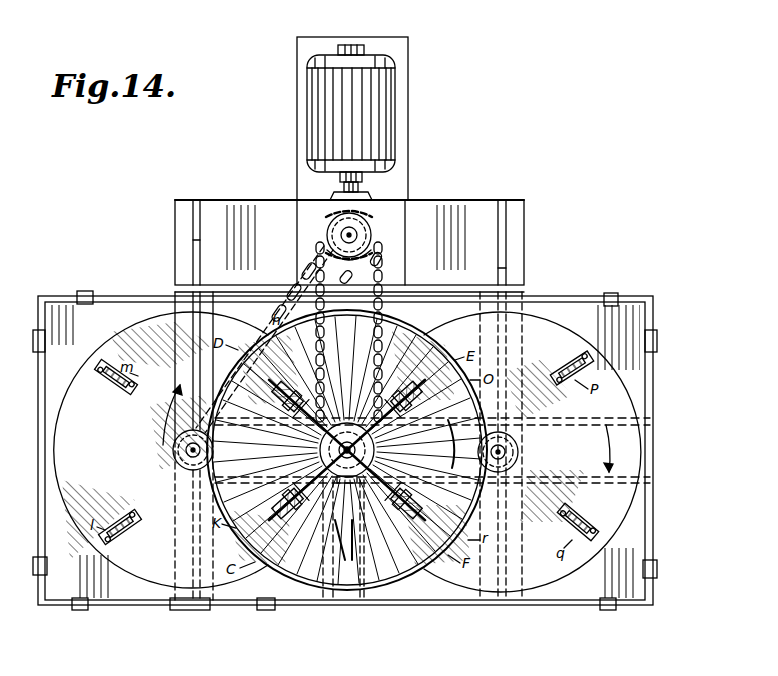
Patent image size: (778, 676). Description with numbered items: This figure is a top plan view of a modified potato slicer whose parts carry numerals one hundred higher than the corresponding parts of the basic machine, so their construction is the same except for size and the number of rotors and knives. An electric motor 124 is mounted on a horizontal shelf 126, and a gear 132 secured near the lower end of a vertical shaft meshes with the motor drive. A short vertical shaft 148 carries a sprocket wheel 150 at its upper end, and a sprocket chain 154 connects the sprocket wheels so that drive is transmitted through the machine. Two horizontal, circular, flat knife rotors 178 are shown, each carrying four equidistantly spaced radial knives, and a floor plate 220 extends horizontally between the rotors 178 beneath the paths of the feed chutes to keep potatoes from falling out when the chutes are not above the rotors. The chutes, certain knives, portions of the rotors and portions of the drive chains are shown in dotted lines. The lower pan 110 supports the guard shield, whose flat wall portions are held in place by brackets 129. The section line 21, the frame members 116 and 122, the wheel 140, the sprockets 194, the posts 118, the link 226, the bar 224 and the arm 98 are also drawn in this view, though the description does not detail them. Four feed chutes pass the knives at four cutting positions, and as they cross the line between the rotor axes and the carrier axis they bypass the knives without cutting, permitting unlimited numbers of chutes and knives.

The section line 21- 21 is at (460, 628).
The electric motor 124 is at (396, 88).
The horizontal shelf 126 is at (408, 164).
The gear 132 is at (363, 196).
The top frame member 116 is at (260, 200).
The upper frame 122 is at (193, 238).
The short vertical shaft 148 is at (340, 230).
The sprocket wheel 150 is at (370, 224).
The sprocket chain 154 is at (376, 250).
The floor plate 220 is at (275, 297).
The wheel 140 is at (372, 324).
The sprocket 194 is at (168, 460).
The knife rotor 178 is at (58, 500).
The pan 110 is at (40, 562).
The brackets 129 is at (80, 608).
The post 118 is at (175, 600).
The link 226 is at (336, 540).
The bar 224 is at (352, 565).
The arm 98 is at (452, 462).